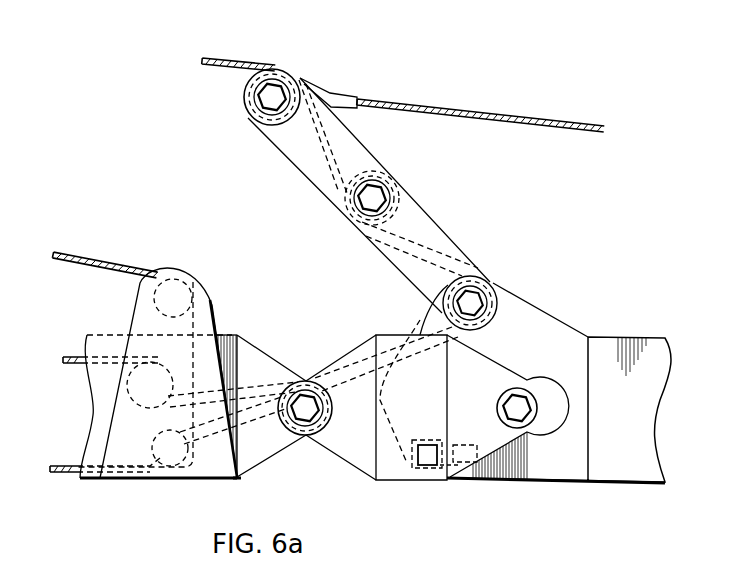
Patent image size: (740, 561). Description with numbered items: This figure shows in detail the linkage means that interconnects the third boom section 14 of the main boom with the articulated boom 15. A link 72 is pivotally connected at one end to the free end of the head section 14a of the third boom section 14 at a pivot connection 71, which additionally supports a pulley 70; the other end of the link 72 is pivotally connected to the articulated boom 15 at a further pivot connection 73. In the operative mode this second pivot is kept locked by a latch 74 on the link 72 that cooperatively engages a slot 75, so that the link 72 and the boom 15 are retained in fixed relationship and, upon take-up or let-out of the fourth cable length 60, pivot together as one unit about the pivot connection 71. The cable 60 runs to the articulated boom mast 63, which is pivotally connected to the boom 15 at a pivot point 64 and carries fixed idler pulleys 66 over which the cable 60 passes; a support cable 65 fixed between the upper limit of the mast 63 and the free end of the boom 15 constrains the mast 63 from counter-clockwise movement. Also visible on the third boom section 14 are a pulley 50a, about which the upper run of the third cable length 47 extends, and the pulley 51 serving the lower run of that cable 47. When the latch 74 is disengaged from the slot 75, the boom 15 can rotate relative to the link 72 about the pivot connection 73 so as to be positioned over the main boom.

The third boom section 14 is at (126, 334).
The head section 14a is at (237, 480).
The articulated boom 15 is at (631, 486).
The third cable length 47 is at (110, 263).
The pulley 50a is at (184, 299).
The pulley 51 is at (152, 480).
The fourth cable length 60 is at (240, 59).
The articulated boom mast 63 is at (360, 159).
The pivot point 64 is at (480, 302).
The support cable 65 is at (432, 108).
The fixed idler pulleys 66 is at (246, 93).
The pulley 70 is at (257, 355).
The pivot connection 71 is at (305, 418).
The link 72 is at (362, 470).
The pivot connection 73 is at (523, 417).
The latch 74 is at (455, 463).
The slot 75 is at (428, 466).